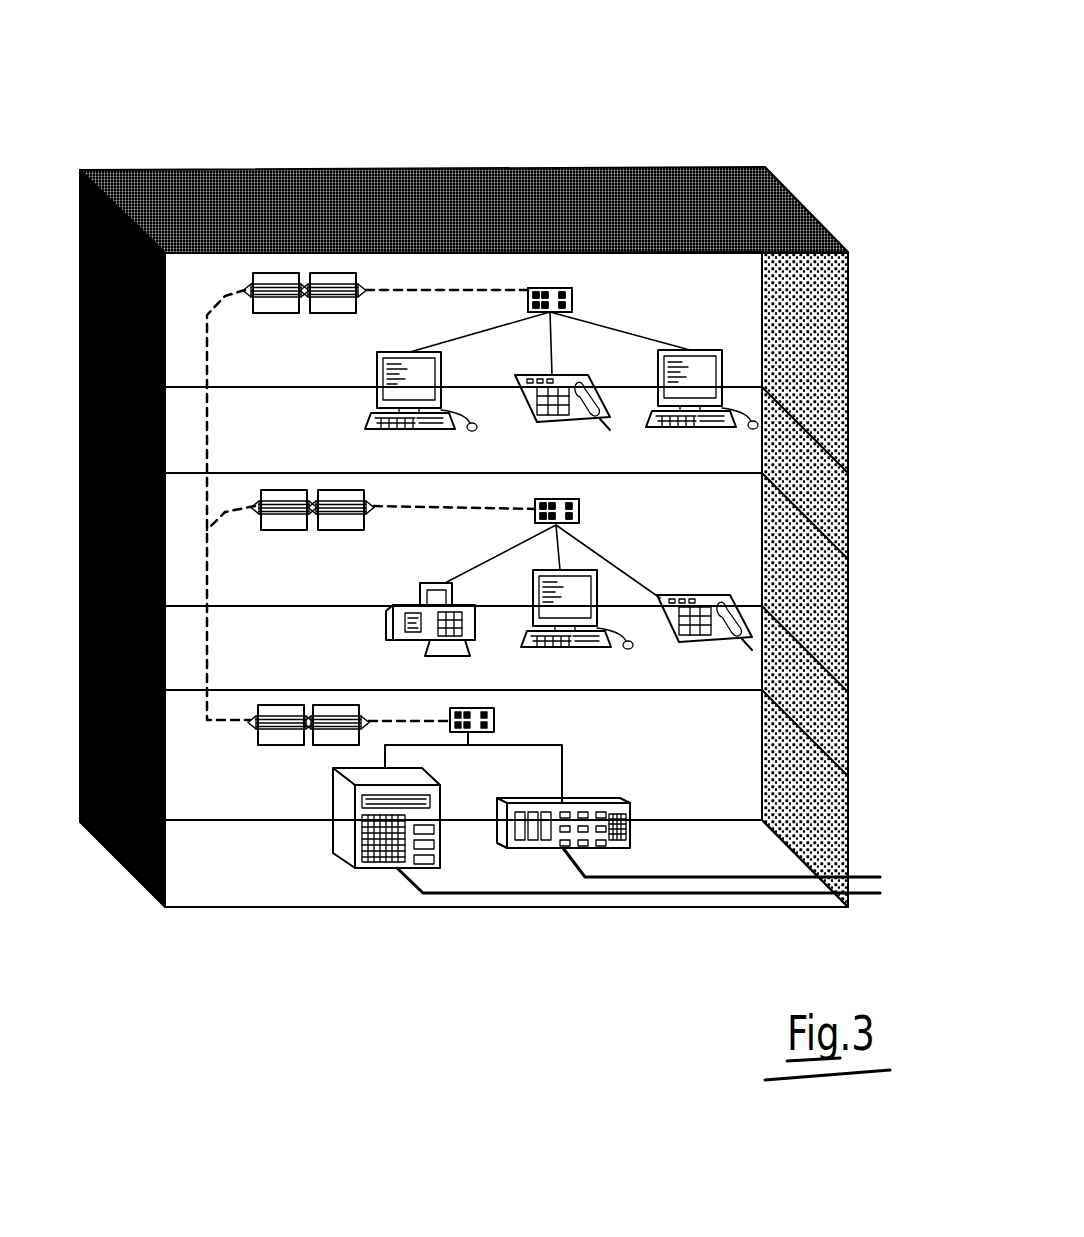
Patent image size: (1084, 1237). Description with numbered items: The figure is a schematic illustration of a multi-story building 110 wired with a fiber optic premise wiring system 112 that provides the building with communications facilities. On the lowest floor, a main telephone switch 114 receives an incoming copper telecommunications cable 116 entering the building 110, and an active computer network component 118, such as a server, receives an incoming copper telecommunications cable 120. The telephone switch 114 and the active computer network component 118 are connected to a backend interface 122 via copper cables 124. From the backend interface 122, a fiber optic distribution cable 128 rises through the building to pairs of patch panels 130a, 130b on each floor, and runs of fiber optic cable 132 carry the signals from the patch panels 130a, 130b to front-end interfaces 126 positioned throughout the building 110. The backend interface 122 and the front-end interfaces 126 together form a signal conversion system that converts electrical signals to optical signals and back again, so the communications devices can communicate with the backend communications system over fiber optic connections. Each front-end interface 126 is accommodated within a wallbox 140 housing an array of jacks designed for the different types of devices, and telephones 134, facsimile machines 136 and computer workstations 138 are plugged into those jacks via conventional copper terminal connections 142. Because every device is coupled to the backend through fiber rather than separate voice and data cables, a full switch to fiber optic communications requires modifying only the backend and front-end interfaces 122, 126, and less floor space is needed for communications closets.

The multi-story building 110 is at (773, 100).
The fiber optic premise wiring system 112 is at (806, 380).
The main telephone switch 114 is at (343, 845).
The incoming copper telecommunications cable 116 is at (528, 894).
The active computer network component 118 is at (592, 801).
The incoming copper telecommunications cable 120 is at (683, 877).
The backend interface 122 is at (492, 717).
The copper cables 124 is at (455, 745).
The front-end interfaces 126 is at (574, 293).
The fiber optic distribution cable 128 is at (207, 576).
The patch panel 130a is at (258, 312).
The patch panel 130b is at (320, 312).
The fiber optic cable 132 is at (432, 287).
The telephones 134 is at (600, 422).
The facsimile machines 136 is at (413, 637).
The computer workstations 138 is at (425, 425).
The wallboxes 140 is at (548, 287).
The copper terminal connections 142 is at (473, 336).